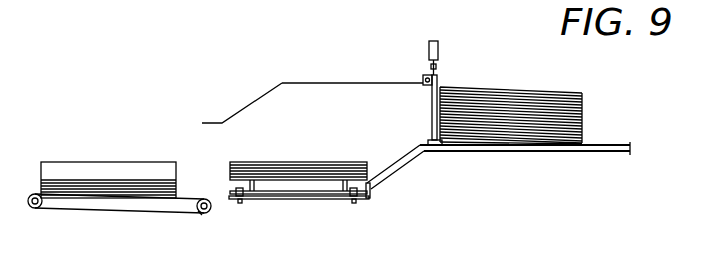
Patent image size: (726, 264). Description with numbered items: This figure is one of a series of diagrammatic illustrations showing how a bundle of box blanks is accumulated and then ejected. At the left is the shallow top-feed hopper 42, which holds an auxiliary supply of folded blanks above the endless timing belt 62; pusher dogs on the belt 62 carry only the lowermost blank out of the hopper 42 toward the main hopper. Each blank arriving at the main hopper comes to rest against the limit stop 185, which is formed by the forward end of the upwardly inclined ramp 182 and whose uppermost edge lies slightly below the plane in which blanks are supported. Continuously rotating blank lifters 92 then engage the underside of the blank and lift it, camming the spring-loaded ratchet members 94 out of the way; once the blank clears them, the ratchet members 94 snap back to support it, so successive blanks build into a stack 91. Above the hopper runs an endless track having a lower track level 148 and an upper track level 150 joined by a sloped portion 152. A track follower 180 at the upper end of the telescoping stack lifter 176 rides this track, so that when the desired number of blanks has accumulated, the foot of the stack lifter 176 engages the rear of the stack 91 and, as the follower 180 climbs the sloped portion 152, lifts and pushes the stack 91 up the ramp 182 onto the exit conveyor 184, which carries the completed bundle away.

The top-feed hopper 42 is at (113, 136).
The endless timing belt 62 is at (100, 213).
The blank lifters 92 is at (240, 203).
The ratchet members 94 is at (254, 183).
The lower track level 148 is at (214, 109).
The sloped portion 152 is at (257, 80).
The upper track level 150 is at (422, 83).
The track follower 180 is at (423, 84).
The stack lifter 176 is at (432, 121).
The stack 91 is at (549, 65).
The upwardly inclined ramp 182 is at (400, 162).
The conveyor 184 is at (494, 146).
The limit stop 185 is at (371, 190).